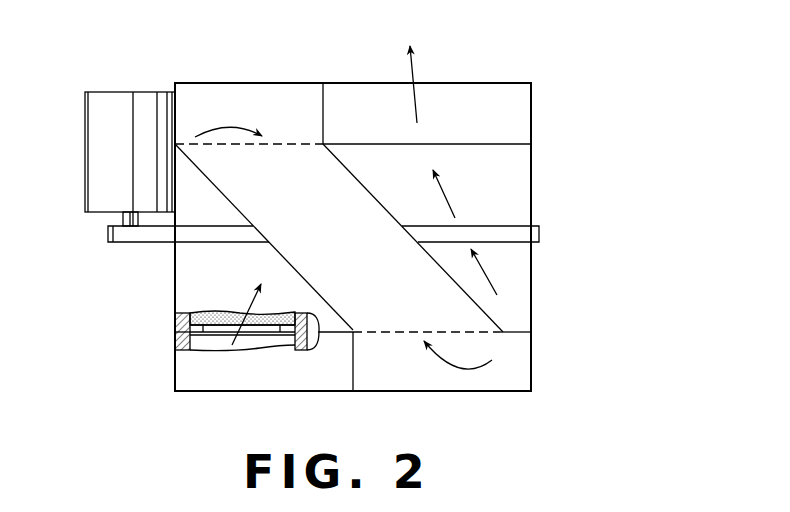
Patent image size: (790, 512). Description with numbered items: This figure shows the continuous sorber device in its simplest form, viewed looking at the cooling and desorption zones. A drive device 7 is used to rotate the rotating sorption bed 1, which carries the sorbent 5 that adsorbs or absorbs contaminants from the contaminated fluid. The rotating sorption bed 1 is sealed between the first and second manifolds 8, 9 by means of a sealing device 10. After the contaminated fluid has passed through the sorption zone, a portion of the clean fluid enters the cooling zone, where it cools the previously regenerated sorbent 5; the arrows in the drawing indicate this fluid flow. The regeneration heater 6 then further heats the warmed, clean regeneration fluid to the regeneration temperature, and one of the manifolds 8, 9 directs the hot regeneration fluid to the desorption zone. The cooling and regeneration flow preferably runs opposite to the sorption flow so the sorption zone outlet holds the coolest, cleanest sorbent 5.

The rotating sorption bed 1 is at (540, 194).
The sorbent 5 is at (213, 315).
The regeneration heater 6 is at (473, 320).
The drive device 7 is at (120, 108).
The first manifold 8 is at (232, 83).
The second manifold 9 is at (175, 362).
The sealing device 10 is at (177, 318).